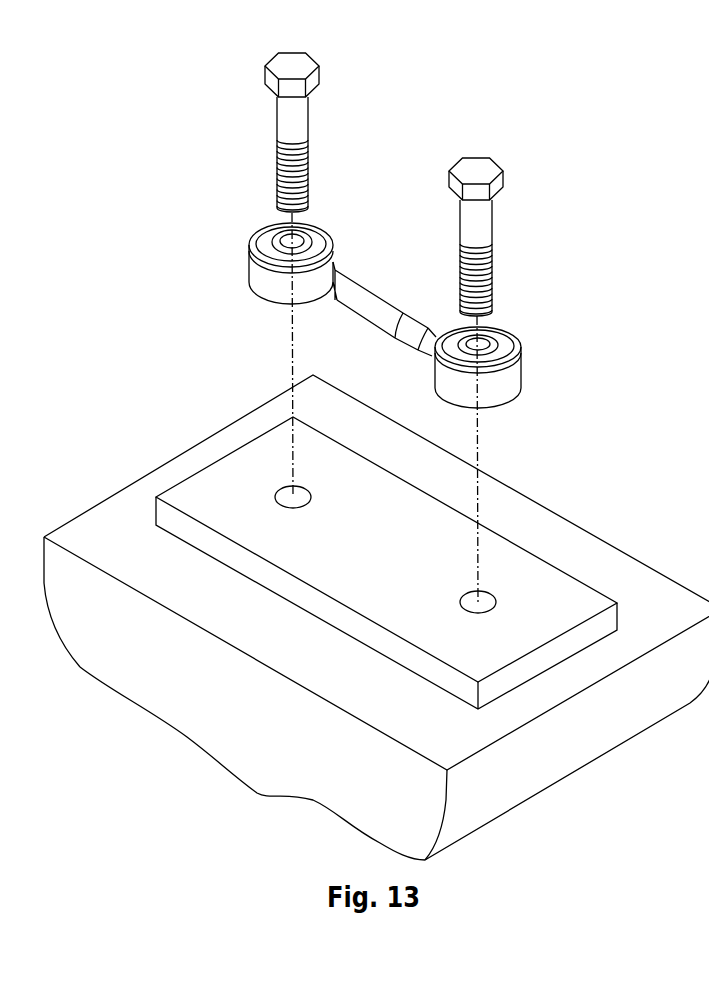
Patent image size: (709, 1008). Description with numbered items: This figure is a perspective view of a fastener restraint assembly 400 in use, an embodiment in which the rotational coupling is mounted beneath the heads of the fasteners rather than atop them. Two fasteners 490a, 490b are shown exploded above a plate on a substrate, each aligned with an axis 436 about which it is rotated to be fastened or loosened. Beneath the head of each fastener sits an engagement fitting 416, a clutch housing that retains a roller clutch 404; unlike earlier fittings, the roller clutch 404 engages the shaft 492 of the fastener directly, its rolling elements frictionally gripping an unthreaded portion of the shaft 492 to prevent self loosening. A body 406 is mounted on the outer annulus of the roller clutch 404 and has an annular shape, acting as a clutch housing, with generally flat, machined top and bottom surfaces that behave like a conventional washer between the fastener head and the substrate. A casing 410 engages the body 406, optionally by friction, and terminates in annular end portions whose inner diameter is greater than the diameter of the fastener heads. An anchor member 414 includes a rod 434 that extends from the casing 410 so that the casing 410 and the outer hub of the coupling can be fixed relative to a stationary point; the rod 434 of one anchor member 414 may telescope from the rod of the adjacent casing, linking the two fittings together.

The fastener restraint assembly 400 is at (378, 242).
The roller clutch 404 is at (481, 347).
The body 406 is at (502, 343).
The casing 410 is at (520, 368).
The anchor member 414 is at (382, 323).
The engagement fitting 416 is at (552, 324).
The rod 434 is at (423, 346).
The axis 436 is at (483, 488).
The fastener 490a is at (525, 218).
The fastener 490b is at (302, 62).
The shaft 492 is at (488, 220).